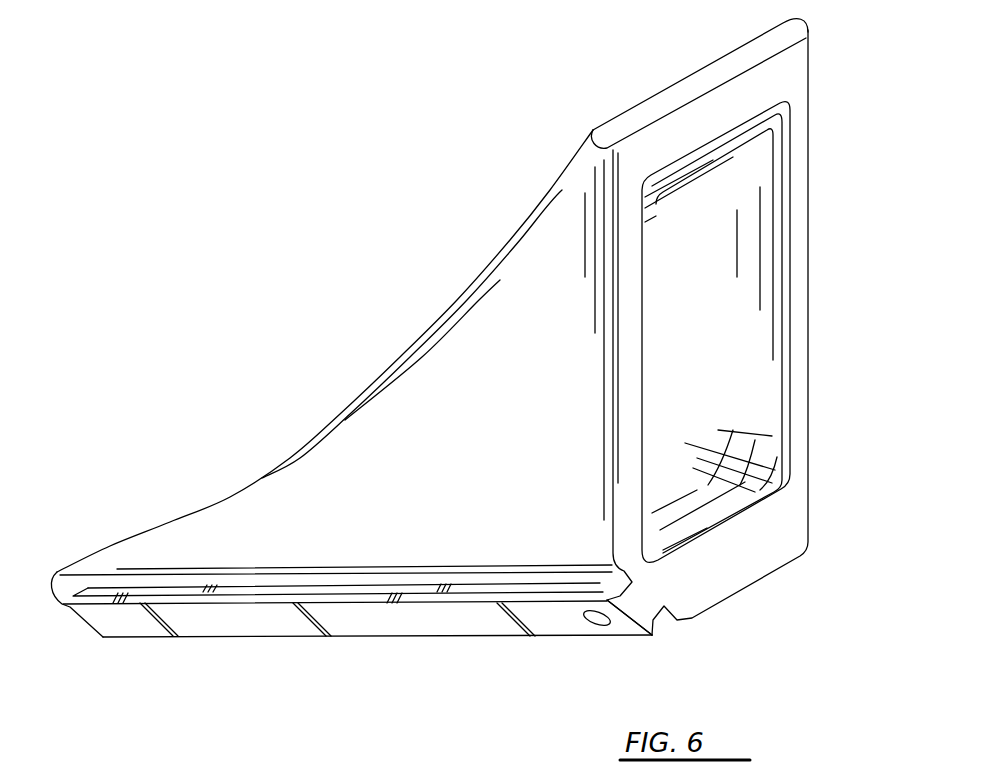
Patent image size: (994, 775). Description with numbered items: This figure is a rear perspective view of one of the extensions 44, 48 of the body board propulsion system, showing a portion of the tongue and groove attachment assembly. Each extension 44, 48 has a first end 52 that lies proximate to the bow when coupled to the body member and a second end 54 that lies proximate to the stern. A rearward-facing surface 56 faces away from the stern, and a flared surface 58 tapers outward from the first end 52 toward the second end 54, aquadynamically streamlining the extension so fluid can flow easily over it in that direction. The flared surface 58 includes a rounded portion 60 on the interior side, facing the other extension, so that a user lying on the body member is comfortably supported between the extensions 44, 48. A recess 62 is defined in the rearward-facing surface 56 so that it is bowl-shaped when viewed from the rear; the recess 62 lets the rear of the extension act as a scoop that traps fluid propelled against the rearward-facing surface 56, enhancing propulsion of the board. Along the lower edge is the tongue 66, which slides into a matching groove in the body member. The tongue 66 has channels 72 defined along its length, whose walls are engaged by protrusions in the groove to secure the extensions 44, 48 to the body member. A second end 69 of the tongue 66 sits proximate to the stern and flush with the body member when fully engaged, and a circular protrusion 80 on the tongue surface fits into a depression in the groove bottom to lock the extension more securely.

The second end 54 is at (724, 58).
The rearward-facing surface 56 is at (792, 64).
The flared surface 58 is at (318, 430).
The first extension 44 is at (412, 319).
The second extension 48 is at (539, 228).
The rounded portion 60 is at (468, 350).
The first end 52 is at (72, 557).
The tongue 66 is at (338, 622).
The recess 62 is at (747, 238).
The circular protrusion 80 is at (583, 628).
The second end of tongue 69 is at (622, 628).
The channels 72 is at (604, 579).